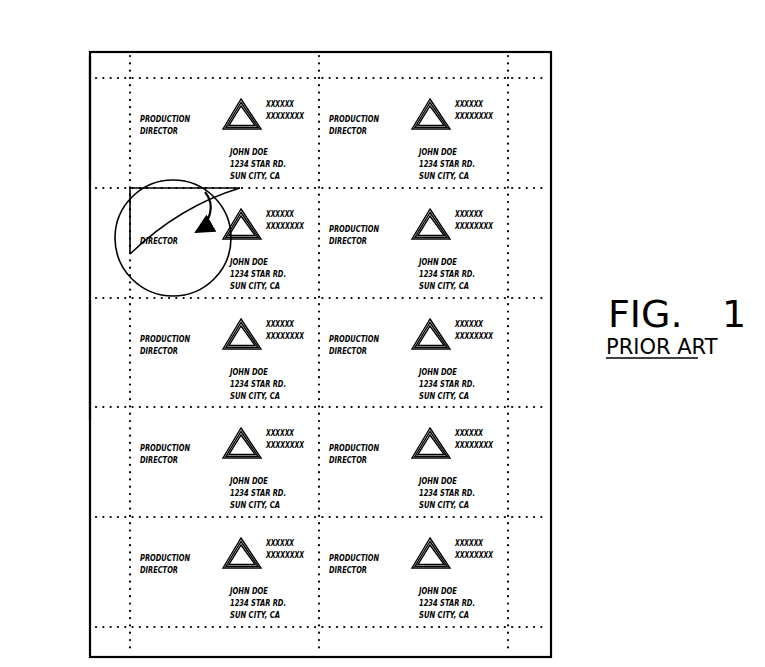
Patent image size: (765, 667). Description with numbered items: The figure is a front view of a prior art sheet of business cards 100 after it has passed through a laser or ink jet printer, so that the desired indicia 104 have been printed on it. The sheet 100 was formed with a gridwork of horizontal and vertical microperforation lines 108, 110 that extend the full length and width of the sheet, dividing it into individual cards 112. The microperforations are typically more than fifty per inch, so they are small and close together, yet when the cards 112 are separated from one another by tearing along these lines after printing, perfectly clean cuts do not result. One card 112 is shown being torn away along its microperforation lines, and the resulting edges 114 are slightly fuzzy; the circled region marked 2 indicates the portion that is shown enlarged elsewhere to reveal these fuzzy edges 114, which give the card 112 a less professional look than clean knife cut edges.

The sheet of business cards 100 is at (570, 159).
The indicia 104 is at (398, 100).
The horizontal microperforation lines 108 is at (525, 189).
The vertical microperforation lines 110 is at (128, 105).
The cards 112 is at (130, 358).
The edges 114 is at (186, 235).
The section view indicator 2 is at (129, 284).